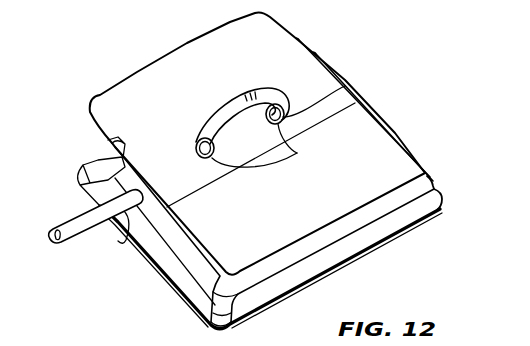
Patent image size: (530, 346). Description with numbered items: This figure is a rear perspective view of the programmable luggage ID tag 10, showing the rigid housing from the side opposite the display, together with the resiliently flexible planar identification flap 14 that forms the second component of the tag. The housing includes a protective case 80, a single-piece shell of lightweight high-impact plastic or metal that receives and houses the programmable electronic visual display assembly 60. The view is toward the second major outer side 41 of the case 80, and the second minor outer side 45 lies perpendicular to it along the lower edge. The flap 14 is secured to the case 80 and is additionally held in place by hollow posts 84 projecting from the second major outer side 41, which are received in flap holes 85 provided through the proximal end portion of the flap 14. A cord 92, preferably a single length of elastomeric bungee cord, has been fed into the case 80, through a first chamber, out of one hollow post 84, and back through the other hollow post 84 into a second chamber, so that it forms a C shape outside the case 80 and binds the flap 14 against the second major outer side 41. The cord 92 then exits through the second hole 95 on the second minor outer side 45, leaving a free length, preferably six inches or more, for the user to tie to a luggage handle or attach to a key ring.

The programmable luggage ID tag 10 is at (349, 31).
The identification flap 14 is at (136, 72).
The second major outer side 41 is at (375, 157).
The second minor outer side 45 is at (193, 289).
The electronic visual display assembly 60 is at (31, 0).
The protective case 80 is at (405, 167).
The hollow posts 84 is at (297, 153).
The flap holes 85 is at (345, 86).
The cord 92 is at (240, 107).
The second hole 95 is at (127, 234).